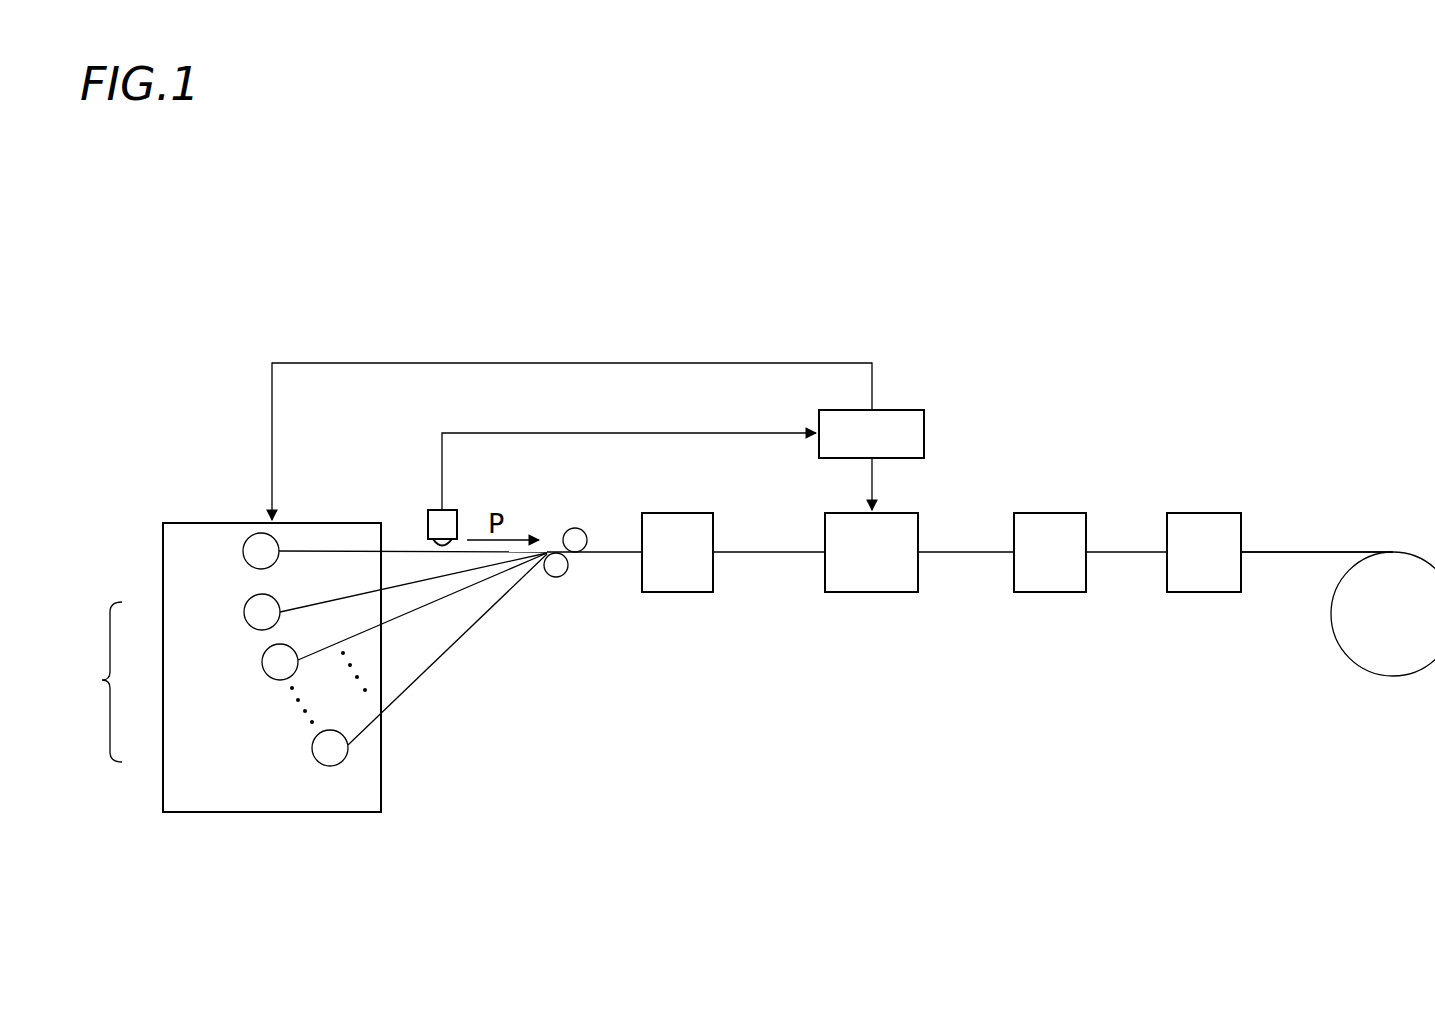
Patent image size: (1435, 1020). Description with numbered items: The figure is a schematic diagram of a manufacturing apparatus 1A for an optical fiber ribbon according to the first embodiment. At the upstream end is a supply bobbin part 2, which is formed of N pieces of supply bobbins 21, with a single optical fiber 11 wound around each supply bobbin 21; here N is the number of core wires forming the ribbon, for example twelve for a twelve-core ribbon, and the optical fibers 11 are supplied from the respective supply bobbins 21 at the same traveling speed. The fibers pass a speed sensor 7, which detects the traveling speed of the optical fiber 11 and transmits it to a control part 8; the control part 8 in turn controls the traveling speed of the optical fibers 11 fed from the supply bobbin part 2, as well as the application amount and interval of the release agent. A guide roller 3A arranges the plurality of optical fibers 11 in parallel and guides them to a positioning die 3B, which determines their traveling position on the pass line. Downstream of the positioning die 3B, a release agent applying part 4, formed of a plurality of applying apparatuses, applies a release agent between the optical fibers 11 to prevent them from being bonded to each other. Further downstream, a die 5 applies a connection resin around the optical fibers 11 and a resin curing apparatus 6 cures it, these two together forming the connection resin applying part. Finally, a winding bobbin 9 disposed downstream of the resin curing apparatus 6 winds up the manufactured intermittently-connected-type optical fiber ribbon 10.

The manufacturing apparatus 1A is at (1024, 306).
The supply bobbin part 2 is at (273, 812).
The supply bobbin 21 is at (252, 560).
The number of core wires N is at (102, 682).
The optical fiber 11 is at (322, 602).
The speed sensor 7 is at (428, 517).
The control part 8 is at (924, 425).
The guide roller 3A is at (583, 550).
The positioning die 3B is at (678, 592).
The release agent applying part 4 is at (857, 592).
The die 5 is at (1050, 592).
The resin curing apparatus 6 is at (1203, 592).
The winding bobbin 9 is at (1362, 668).
The intermittently-connected-type optical fiber ribbon 10 is at (1294, 551).